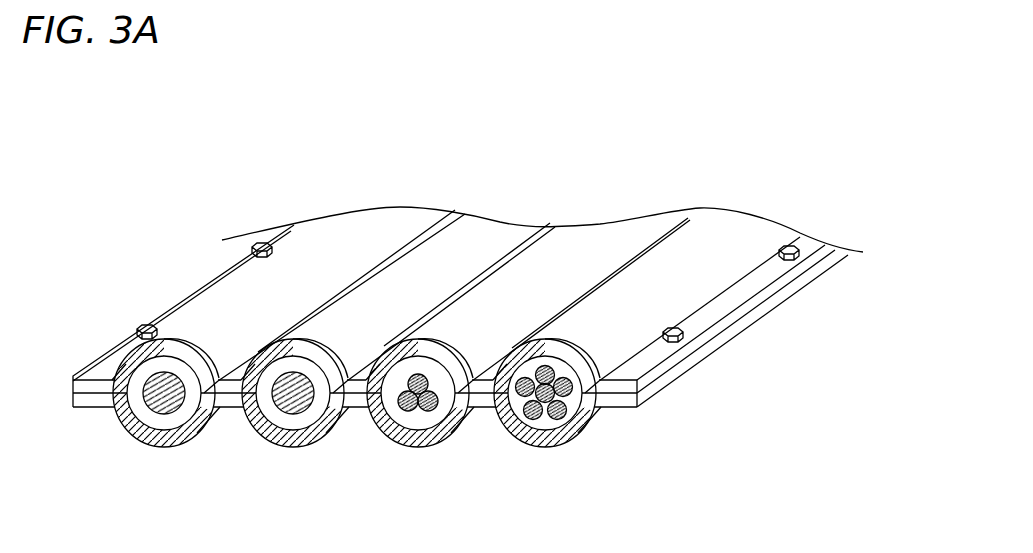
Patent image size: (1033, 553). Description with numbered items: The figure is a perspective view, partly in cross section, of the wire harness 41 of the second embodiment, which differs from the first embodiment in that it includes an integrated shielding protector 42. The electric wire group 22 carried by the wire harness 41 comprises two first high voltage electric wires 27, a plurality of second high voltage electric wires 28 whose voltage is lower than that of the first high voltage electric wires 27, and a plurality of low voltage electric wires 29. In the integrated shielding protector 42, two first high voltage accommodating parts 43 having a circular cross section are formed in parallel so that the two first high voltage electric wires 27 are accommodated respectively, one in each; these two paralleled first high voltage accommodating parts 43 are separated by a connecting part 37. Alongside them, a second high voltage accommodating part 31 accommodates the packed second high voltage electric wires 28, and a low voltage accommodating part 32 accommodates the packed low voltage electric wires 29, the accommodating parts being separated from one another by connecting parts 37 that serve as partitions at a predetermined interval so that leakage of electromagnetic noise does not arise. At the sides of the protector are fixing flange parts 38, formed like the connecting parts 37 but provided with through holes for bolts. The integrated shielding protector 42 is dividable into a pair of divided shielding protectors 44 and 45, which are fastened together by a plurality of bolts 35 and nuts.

The electric wire group 22 is at (222, 57).
The first high voltage electric wire 27 is at (124, 468).
The second high voltage electric wire 28 is at (408, 487).
The low voltage electric wire 29 is at (553, 480).
The second high voltage accommodating part 31 is at (400, 407).
The low voltage accommodating part 32 is at (512, 417).
The bolt 35 is at (263, 243).
The connecting part 37 is at (238, 363).
The fixing flange part 38 is at (110, 360).
The wire harness 41 is at (593, 153).
The integrated shielding protector 42 is at (508, 304).
The first high voltage accommodating part 43 is at (125, 418).
The divided shielding protector 44 is at (197, 306).
The divided shielding protector 45 is at (172, 447).